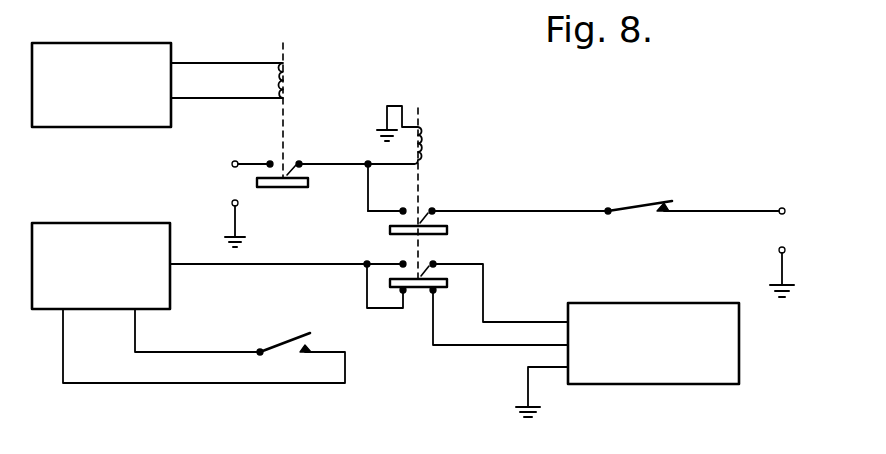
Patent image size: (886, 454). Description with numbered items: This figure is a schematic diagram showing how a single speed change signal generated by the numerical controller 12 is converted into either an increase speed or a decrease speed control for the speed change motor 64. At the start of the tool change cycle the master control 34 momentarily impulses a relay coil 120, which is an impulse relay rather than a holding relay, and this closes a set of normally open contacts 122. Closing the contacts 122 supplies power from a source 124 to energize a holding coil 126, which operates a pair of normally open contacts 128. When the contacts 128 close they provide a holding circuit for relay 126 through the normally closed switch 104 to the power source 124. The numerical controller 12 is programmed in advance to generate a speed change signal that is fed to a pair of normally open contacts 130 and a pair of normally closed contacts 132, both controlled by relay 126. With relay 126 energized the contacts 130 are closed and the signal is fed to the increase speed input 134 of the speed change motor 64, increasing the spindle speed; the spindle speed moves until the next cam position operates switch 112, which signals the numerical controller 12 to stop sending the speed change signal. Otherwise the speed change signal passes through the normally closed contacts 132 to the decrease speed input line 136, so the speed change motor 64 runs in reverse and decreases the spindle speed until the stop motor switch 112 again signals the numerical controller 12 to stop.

The master control 34 is at (116, 43).
The relay coil 120 is at (281, 62).
The normally open contacts 122 is at (288, 158).
The power source 124 is at (233, 161).
The holding coil 126 is at (423, 138).
The normally open contacts 128 is at (431, 208).
The normally closed switch 104 is at (631, 197).
The numerical controller 12 is at (82, 223).
The switch 112 is at (280, 345).
The normally open contacts 130 is at (437, 262).
The normally closed contacts 132 is at (407, 304).
The increase speed input 134 is at (483, 298).
The decrease speed input line 136 is at (520, 347).
The speed change motor 64 is at (739, 352).